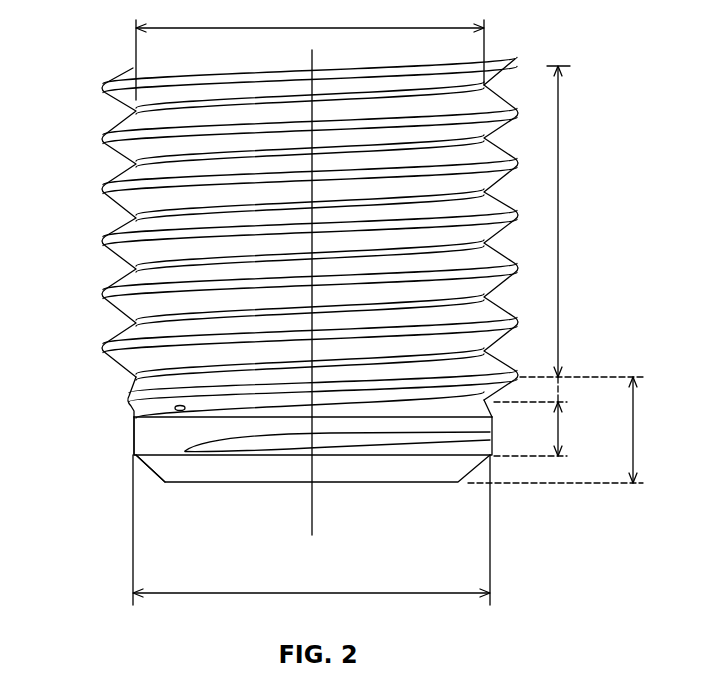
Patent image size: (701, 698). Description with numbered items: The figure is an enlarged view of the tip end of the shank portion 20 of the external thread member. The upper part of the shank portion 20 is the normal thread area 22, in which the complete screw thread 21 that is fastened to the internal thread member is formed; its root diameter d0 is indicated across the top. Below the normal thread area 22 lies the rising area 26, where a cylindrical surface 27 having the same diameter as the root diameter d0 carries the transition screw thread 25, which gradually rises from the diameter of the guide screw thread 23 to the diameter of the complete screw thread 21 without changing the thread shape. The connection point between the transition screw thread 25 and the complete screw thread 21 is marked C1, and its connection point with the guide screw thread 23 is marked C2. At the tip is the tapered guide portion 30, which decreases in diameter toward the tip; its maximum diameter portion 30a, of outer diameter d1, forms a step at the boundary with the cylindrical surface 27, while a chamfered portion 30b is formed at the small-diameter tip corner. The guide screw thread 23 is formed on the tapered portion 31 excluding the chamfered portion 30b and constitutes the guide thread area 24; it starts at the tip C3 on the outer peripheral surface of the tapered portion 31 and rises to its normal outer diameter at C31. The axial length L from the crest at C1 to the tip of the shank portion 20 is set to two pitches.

The shank portion 20 is at (278, 301).
The complete screw thread 21 is at (104, 295).
The normal thread area 22 is at (581, 221).
The guide screw thread 23 is at (313, 492).
The guide thread area 24 is at (562, 427).
The transition screw thread 25 is at (387, 393).
The rising area 26 is at (562, 389).
The cylindrical surface 27 is at (135, 386).
The tapered guide portion 30 is at (267, 479).
The maximum diameter portion 30a is at (187, 411).
The chamfered portion 30b is at (152, 481).
The tapered portion 31 is at (133, 437).
The connection point between transition screw thread and complete screw thread C1 is at (518, 377).
The connection point between transition screw thread and guide screw thread C2 is at (132, 402).
The tip of guide screw thread C3 is at (188, 457).
The position where guide screw thread has risen to normal outer diameter C31 is at (307, 447).
The root diameter d0 is at (310, 51).
The outer diameter of maximum diameter portion d1 is at (311, 530).
The axial length L is at (560, 430).